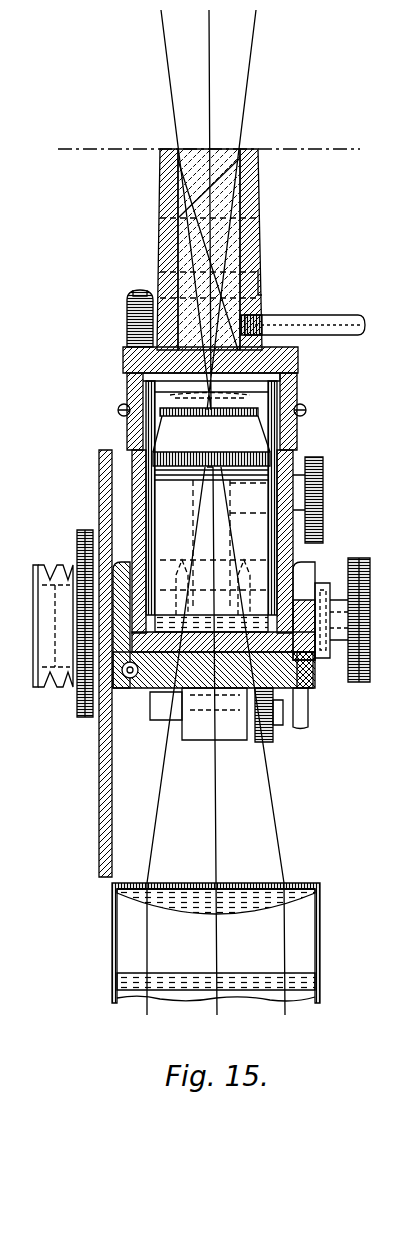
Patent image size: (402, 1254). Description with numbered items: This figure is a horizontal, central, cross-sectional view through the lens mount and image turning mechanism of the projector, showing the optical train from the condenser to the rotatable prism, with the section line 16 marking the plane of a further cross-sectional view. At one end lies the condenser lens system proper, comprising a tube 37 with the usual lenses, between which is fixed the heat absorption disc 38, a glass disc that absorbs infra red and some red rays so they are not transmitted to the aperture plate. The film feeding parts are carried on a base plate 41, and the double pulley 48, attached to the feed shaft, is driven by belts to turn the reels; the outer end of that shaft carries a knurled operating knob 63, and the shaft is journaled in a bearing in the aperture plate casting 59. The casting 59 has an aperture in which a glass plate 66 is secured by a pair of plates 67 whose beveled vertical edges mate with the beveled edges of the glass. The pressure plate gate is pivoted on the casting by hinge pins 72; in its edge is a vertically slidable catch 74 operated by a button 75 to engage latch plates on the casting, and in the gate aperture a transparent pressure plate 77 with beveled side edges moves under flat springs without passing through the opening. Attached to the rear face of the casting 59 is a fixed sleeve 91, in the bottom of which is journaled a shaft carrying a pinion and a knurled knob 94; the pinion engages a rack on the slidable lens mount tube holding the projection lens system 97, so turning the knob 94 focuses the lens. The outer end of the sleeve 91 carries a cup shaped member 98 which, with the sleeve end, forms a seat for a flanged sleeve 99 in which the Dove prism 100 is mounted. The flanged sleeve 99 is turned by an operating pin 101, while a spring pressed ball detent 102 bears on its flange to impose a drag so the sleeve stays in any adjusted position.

The section line 16- 16 is at (345, 147).
The tube 37 is at (112, 926).
The heat absorption disc 38 is at (112, 984).
The base plate 41 is at (98, 462).
The double pulley 48 is at (48, 684).
The aperture plate casting 59 is at (116, 562).
The knurled operating knob 63 is at (358, 558).
The glass plate 66 is at (198, 702).
The plates 67 is at (130, 690).
The hinge pins 72 is at (125, 690).
The catch 74 is at (314, 686).
The button 75 is at (306, 722).
The transparent pressure plate 77 is at (237, 744).
The fixed sleeve 91 is at (292, 458).
The knurled knob 94 is at (323, 484).
The projection lens system 97 is at (182, 476).
The cup shaped member 98 is at (298, 387).
The flanged sleeve 99 is at (262, 242).
The Dove prism 100 is at (176, 246).
The operating pin 101 is at (340, 318).
The spring pressed ball detent 102 is at (128, 334).